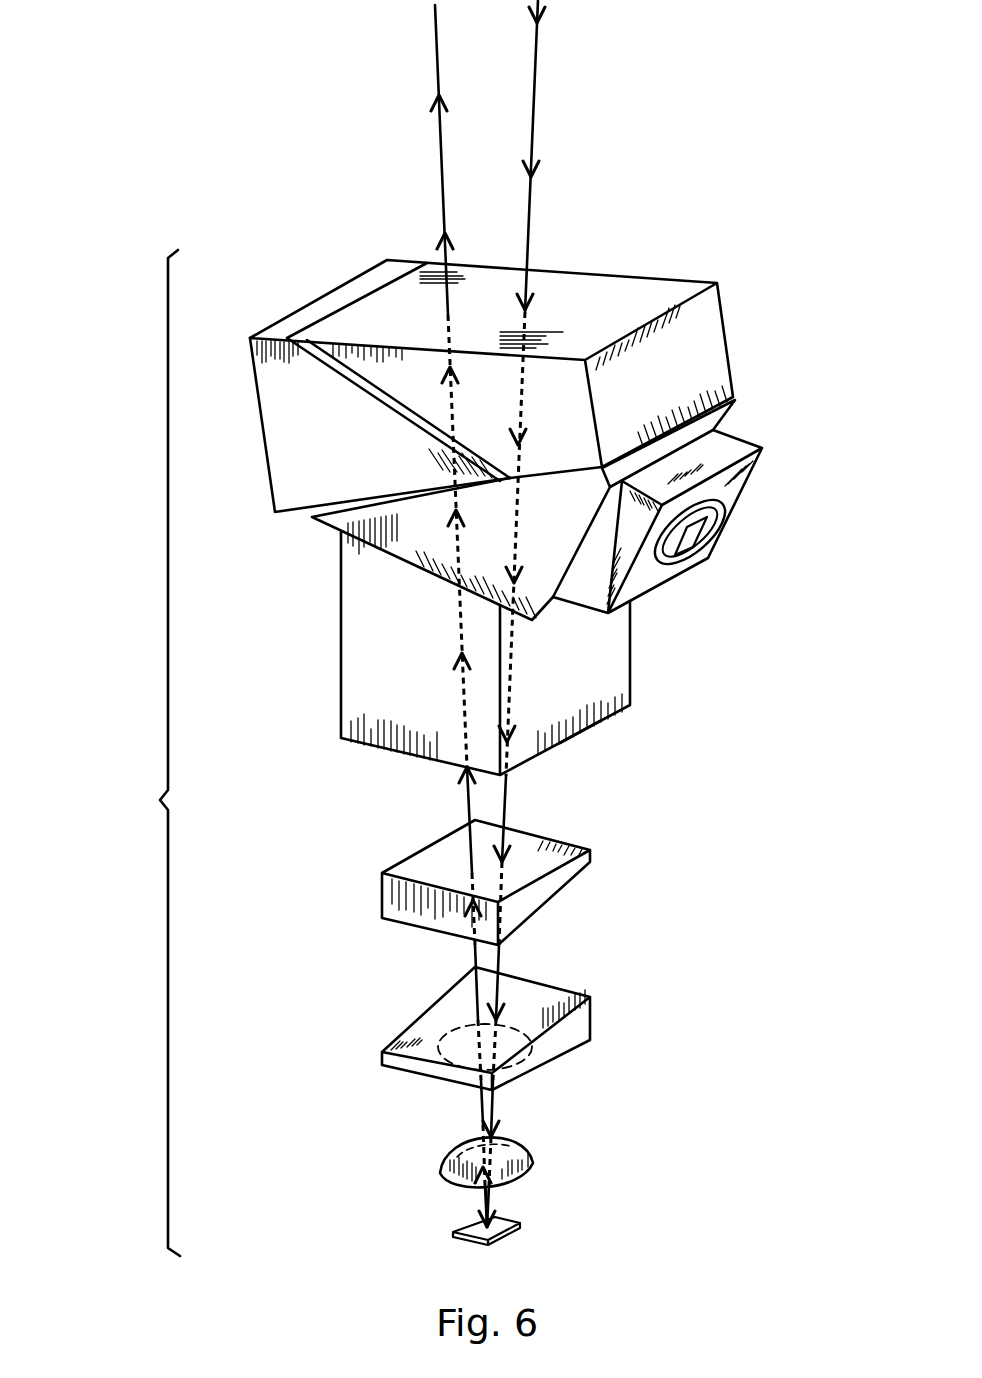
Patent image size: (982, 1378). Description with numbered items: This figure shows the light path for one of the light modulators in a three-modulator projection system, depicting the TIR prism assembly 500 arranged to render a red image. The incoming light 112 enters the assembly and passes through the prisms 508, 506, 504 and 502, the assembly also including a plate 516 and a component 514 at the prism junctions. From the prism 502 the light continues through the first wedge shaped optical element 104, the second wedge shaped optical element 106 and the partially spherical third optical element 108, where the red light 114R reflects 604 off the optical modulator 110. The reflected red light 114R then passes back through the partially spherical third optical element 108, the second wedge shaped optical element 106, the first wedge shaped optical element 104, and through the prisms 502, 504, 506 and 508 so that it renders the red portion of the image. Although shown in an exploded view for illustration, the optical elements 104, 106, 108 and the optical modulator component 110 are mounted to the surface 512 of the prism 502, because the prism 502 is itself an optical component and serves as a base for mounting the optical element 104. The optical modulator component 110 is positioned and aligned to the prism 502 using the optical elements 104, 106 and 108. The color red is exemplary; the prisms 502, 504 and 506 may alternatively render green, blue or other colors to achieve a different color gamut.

The TIR prism assembly 500 is at (160, 800).
The prism 502 is at (417, 647).
The prism 504 is at (427, 541).
The prism 506 is at (362, 451).
The prism 508 is at (682, 386).
The surface of prism 502 512 is at (580, 733).
The detector assembly 514 is at (721, 421).
The beam splitter plate 516 is at (273, 492).
The first wedge shaped optical element 104 is at (443, 855).
The second wedge shaped optical element 106 is at (443, 1017).
The partially spherical third optical element 108 is at (502, 1153).
The optical modulator 110 is at (472, 1225).
The reflection 604 is at (487, 1218).
The light 112 is at (537, 62).
The red light 114R is at (437, 50).